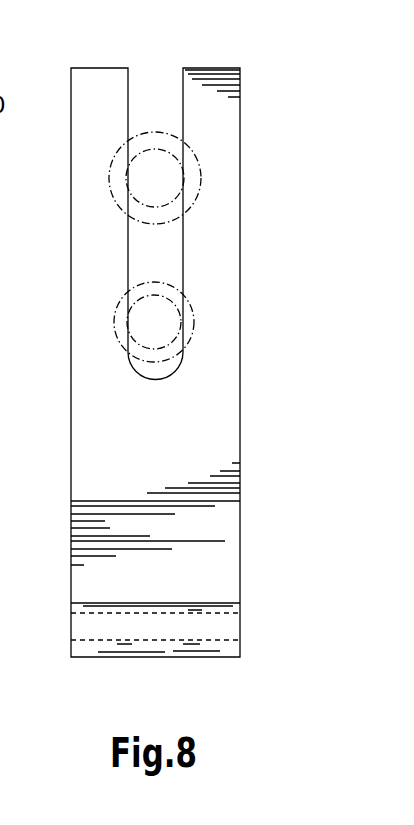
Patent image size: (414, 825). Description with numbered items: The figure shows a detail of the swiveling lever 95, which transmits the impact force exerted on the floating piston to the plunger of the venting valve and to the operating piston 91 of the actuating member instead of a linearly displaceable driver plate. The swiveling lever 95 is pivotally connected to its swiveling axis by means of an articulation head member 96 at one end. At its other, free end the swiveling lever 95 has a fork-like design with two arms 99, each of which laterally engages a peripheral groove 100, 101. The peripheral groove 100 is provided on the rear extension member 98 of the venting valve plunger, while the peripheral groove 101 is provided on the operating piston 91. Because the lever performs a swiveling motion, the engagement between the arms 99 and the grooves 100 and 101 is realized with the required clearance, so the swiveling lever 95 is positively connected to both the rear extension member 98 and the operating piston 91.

The operating piston 91 is at (115, 320).
The swiveling lever 95 is at (113, 485).
The articulation head member 96 is at (172, 650).
The rear extension member 98 is at (112, 163).
The arms 99 is at (101, 88).
The peripheral groove 100 is at (157, 148).
The peripheral groove 101 is at (153, 293).